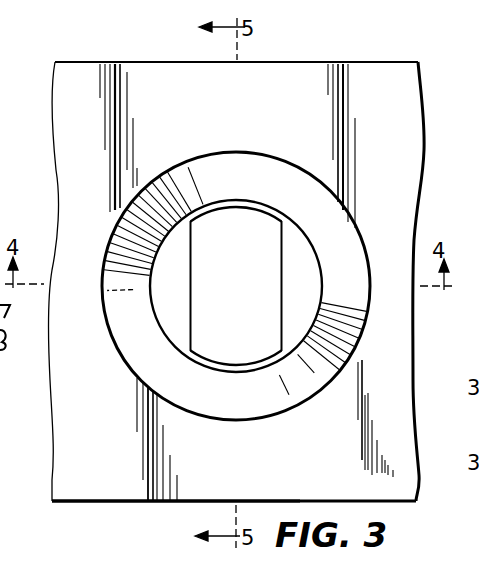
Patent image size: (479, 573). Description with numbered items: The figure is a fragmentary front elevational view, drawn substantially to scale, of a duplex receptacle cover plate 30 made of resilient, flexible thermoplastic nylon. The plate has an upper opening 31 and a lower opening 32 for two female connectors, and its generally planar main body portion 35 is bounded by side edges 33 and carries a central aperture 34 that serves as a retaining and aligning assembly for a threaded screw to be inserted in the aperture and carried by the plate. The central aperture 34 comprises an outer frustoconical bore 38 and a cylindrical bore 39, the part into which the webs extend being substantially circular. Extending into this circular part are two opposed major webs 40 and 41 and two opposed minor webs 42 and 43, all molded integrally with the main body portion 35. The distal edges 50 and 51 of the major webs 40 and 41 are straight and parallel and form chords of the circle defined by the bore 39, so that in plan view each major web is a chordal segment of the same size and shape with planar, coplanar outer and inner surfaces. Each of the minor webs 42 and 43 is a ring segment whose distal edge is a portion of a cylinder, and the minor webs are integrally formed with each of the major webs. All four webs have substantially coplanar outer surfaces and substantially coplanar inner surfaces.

The duplex receptacle cover plate 30 is at (374, 61).
The upper opening 31 is at (128, 62).
The lower opening 32 is at (86, 503).
The left side edge 33 is at (53, 281).
The central aperture 34 is at (388, 184).
The main body portion 35 is at (453, 78).
The frustoconical bore 38 is at (275, 407).
The cylindrical bore 39 is at (311, 237).
The major web 40 is at (368, 290).
The major web 41 is at (165, 289).
The minor web 42 is at (236, 213).
The minor web 43 is at (230, 358).
The distal edge of major web 50 is at (280, 270).
The distal edge of major web 51 is at (194, 280).